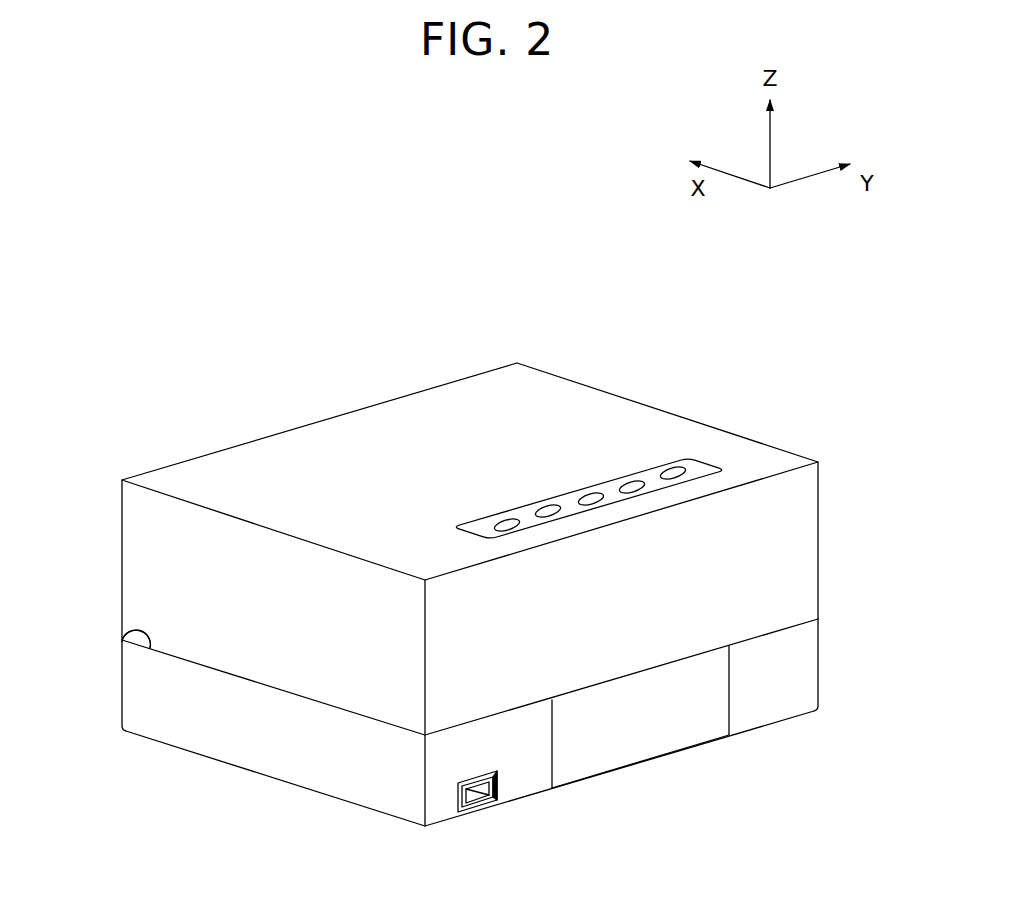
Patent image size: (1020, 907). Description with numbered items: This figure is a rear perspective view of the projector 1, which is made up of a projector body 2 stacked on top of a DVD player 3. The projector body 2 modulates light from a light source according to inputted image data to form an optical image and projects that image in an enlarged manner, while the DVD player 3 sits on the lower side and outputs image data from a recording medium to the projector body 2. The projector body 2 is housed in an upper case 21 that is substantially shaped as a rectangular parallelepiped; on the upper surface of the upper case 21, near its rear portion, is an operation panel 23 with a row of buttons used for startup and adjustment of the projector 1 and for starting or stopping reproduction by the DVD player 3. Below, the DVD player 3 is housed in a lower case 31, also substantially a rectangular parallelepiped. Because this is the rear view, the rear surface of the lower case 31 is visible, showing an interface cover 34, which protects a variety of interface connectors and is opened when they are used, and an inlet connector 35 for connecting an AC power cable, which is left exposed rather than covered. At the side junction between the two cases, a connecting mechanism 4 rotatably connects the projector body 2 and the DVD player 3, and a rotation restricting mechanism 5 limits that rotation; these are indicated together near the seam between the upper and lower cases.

The projector 1 is at (738, 357).
The projector body 2 is at (832, 488).
The upper case 21 is at (800, 523).
The operation panel 23 is at (466, 538).
The DVD player 3 is at (832, 660).
The lower case 31 is at (778, 712).
The interface cover 34 is at (645, 748).
The inlet connector 35 is at (497, 792).
The connecting mechanism 4 is at (122, 650).
The rotation restricting mechanism 5 is at (136, 639).